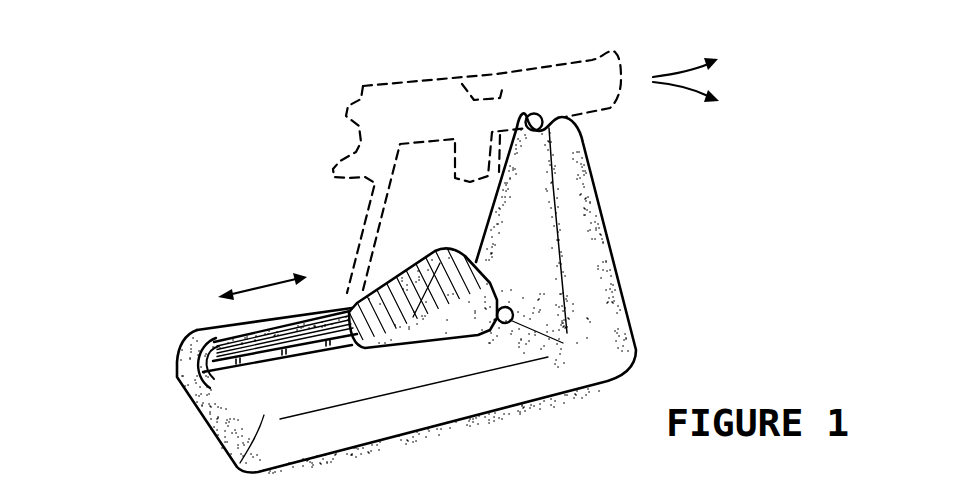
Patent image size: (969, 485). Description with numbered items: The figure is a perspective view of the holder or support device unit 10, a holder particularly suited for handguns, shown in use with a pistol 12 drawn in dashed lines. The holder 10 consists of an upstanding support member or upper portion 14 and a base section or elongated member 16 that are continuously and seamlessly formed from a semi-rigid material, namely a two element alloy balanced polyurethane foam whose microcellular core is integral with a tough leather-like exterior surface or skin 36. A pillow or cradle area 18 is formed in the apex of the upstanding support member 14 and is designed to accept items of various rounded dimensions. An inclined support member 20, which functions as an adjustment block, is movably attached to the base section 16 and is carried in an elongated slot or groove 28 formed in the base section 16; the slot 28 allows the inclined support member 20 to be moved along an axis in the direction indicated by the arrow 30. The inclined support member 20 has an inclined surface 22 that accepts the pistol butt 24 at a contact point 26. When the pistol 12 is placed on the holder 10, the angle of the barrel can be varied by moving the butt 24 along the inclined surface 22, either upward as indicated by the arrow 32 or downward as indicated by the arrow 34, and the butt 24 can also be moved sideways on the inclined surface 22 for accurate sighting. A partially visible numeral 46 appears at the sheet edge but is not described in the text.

The holder or support device unit 10 is at (184, 223).
The pistol 12 is at (452, 82).
The upstanding support member or upper portion 14 is at (538, 250).
The base section or elongated member 16 is at (183, 352).
The pillow or cradle area 18 is at (541, 116).
The inclined support member 20 is at (387, 333).
The inclined surface 22 is at (460, 333).
The pistol butt 24 is at (356, 252).
The contact point 26 is at (397, 350).
The elongated slot or groove 28 is at (213, 378).
The arrow 30 is at (257, 288).
The arrow 32 is at (673, 70).
The arrow 34 is at (678, 88).
The exterior surface or skin 36 is at (600, 317).
The partially visible numeral 46 is at (643, 479).